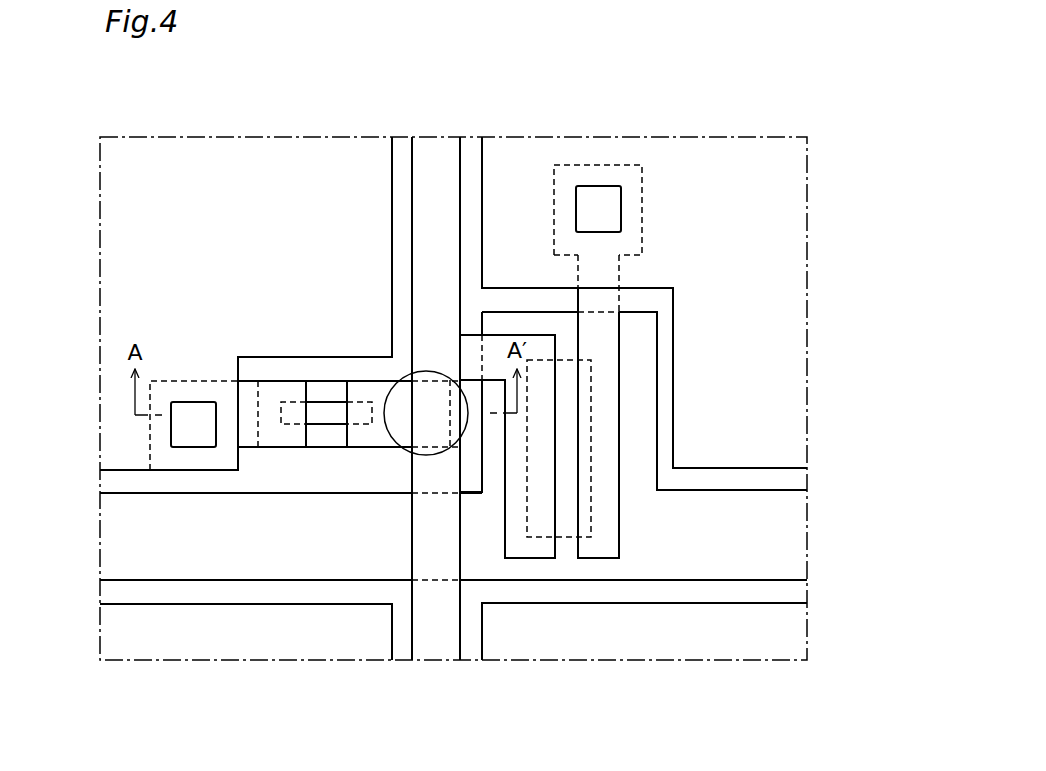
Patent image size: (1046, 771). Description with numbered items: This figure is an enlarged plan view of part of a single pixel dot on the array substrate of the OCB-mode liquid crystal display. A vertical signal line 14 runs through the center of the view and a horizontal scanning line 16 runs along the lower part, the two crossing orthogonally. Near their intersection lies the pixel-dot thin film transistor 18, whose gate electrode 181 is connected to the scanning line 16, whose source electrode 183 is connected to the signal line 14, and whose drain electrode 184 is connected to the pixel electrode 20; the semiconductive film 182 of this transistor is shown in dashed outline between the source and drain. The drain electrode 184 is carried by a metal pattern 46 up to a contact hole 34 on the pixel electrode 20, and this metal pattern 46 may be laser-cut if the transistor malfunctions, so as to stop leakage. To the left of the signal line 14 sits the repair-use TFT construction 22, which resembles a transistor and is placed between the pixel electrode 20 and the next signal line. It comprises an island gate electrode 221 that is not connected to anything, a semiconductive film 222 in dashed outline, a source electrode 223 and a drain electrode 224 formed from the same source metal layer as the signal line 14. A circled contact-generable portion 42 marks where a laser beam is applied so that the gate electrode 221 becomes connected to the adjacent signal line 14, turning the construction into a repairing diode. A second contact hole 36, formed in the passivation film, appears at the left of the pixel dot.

The signal line 14 is at (440, 150).
The scanning line 16 is at (138, 537).
The pixel-dot thin film transistor 18 is at (685, 506).
The pixel electrode 20 is at (262, 168).
The repair-use TFT construction 22 is at (244, 505).
The contact hole 34 is at (598, 198).
The contact hole 36 is at (180, 437).
The contact-generable portion 42 is at (431, 370).
The metal pattern 46 is at (620, 272).
The gate electrode 181 is at (643, 412).
The semiconductive film 182 is at (565, 528).
The source electrode 183 is at (528, 558).
The drain electrode 184 is at (607, 558).
The gate electrode 221 is at (325, 442).
The semiconductive film 222 is at (328, 412).
The source electrode 223 is at (360, 442).
The drain electrode 224 is at (272, 442).